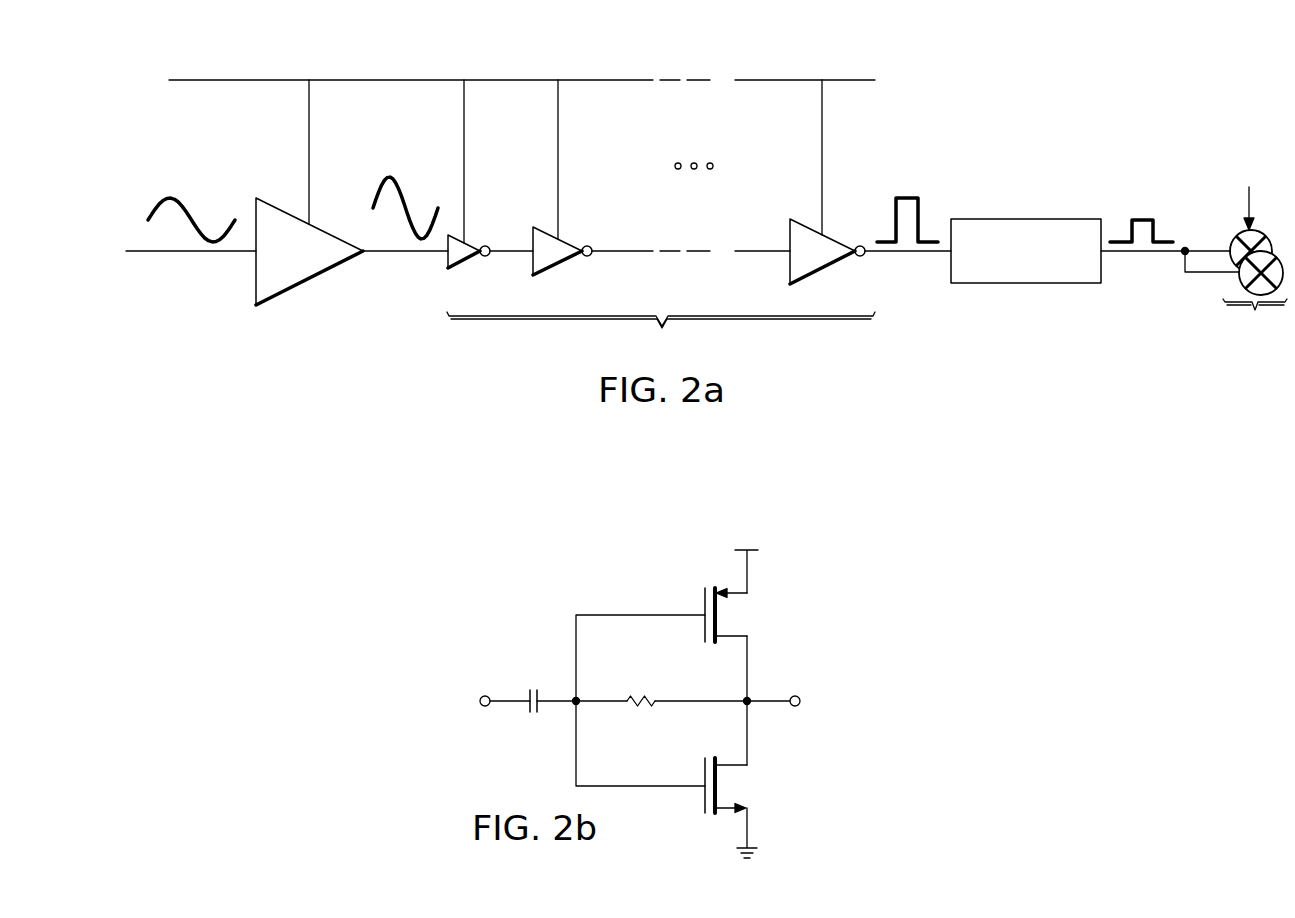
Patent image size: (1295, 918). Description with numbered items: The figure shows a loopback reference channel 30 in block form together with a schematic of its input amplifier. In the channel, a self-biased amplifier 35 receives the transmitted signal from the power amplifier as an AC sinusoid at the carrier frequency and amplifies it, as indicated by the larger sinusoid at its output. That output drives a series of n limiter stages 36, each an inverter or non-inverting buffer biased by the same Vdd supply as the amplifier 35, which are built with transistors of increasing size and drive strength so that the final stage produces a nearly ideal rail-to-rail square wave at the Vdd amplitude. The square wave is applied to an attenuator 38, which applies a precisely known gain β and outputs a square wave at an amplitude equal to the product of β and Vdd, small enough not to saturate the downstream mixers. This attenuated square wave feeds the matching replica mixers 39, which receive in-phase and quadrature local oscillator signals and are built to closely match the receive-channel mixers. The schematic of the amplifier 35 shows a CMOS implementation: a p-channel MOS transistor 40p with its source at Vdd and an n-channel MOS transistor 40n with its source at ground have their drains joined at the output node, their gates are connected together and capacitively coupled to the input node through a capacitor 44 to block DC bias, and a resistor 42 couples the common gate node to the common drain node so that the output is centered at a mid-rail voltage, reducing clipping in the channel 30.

In FIG. 2A, the loopback reference channel 30 is at (1210, 90).
In FIG. 2A, the self-biased amplifier 35 is at (256, 270).
In FIG. 2B, the self-biased amplifier 35 is at (522, 592).
In FIG. 2A, the limiter stages 36 is at (790, 262).
In FIG. 2A, the attenuator 38 is at (1023, 283).
In FIG. 2A, the replica mixers 39 is at (1257, 252).
In FIG. 2B, the p-channel MOS transistor 40p is at (704, 606).
In FIG. 2B, the n-channel MOS transistor 40n is at (705, 800).
In FIG. 2B, the resistor 42 is at (638, 710).
In FIG. 2B, the capacitor 44 is at (532, 715).